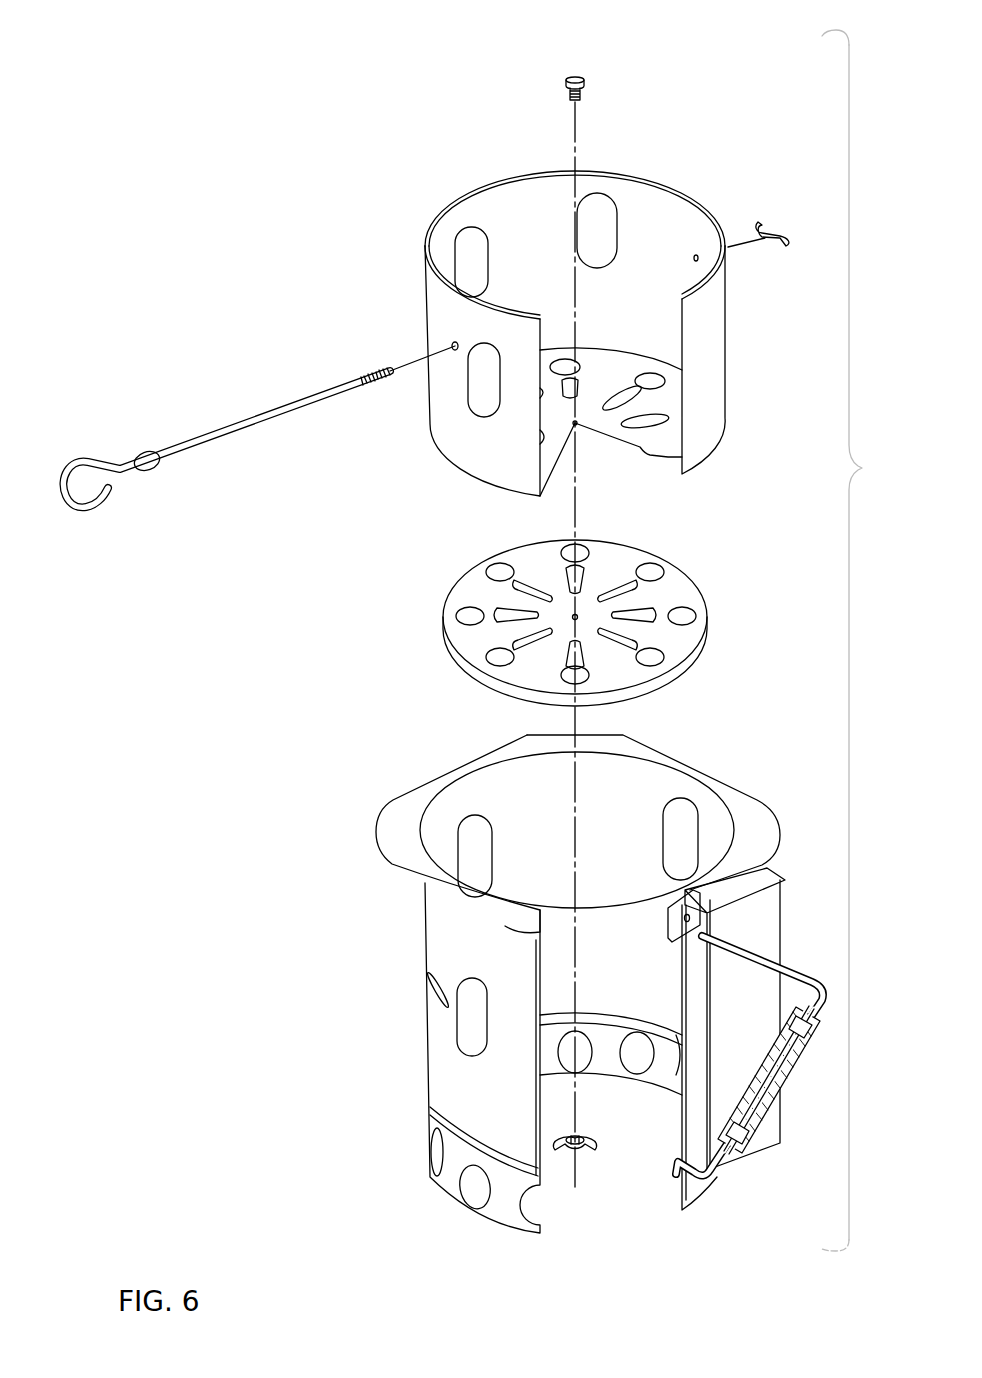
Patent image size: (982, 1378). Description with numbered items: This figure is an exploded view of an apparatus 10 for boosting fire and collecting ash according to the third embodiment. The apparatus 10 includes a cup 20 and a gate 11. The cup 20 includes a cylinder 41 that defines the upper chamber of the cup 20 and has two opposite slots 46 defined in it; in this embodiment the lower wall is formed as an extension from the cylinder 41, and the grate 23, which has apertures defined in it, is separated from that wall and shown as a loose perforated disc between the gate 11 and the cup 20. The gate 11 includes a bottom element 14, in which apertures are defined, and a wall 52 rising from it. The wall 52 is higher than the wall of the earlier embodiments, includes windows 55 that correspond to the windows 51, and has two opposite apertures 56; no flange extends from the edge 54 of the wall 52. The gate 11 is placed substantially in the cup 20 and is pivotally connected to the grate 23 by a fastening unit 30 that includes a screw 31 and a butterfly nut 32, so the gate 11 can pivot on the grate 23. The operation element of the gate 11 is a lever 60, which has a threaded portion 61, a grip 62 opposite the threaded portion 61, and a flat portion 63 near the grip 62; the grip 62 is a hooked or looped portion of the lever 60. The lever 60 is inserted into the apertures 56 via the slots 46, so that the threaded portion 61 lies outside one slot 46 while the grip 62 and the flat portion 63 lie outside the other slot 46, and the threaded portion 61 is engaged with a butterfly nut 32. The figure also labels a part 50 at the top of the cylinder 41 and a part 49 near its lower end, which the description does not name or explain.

The apparatus for boosting fire and collecting ash 10 is at (736, 640).
The gate 11 is at (630, 452).
The bottom element 14 is at (600, 432).
The cup 20 is at (333, 931).
The grate 23 is at (690, 640).
The fastening unit 30 is at (589, 71).
The screw 31 is at (572, 74).
The butterfly nut 32 is at (772, 246).
The cylinder 41 is at (452, 1093).
The slots 46 is at (430, 996).
The inner ring 49 is at (618, 1024).
The flange 50 is at (378, 829).
The windows 51 is at (472, 847).
The wall 52 is at (718, 372).
The edge 54 is at (656, 181).
The windows 55 is at (470, 262).
The apertures 56 is at (451, 346).
The lever 60 is at (232, 458).
The threaded portion 61 is at (368, 386).
The grip 62 is at (84, 514).
The flat portion 63 is at (147, 472).